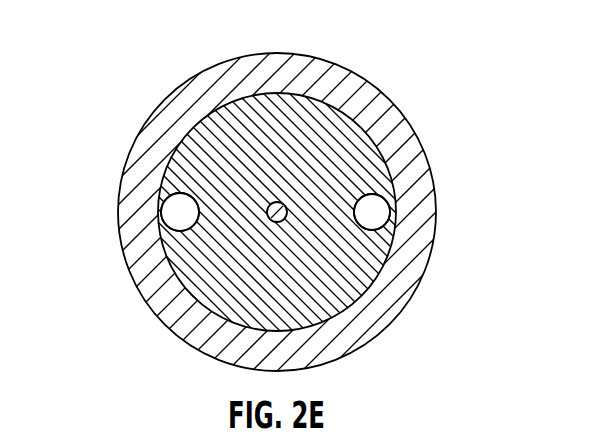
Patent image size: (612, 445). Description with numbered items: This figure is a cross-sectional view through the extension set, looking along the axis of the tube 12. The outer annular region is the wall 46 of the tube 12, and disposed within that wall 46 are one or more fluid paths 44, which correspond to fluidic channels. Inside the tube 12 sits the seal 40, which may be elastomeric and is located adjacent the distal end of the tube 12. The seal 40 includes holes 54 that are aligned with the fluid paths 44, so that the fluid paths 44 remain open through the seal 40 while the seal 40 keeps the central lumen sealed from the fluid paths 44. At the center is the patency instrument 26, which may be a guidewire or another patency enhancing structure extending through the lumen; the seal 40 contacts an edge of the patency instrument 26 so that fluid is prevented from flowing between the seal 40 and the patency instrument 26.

The tube 12 is at (364, 94).
The wall 46 is at (168, 105).
The seal 40 is at (283, 100).
The fluid paths 44 is at (159, 210).
The holes 54 is at (162, 213).
The patency instrument 26 is at (266, 213).